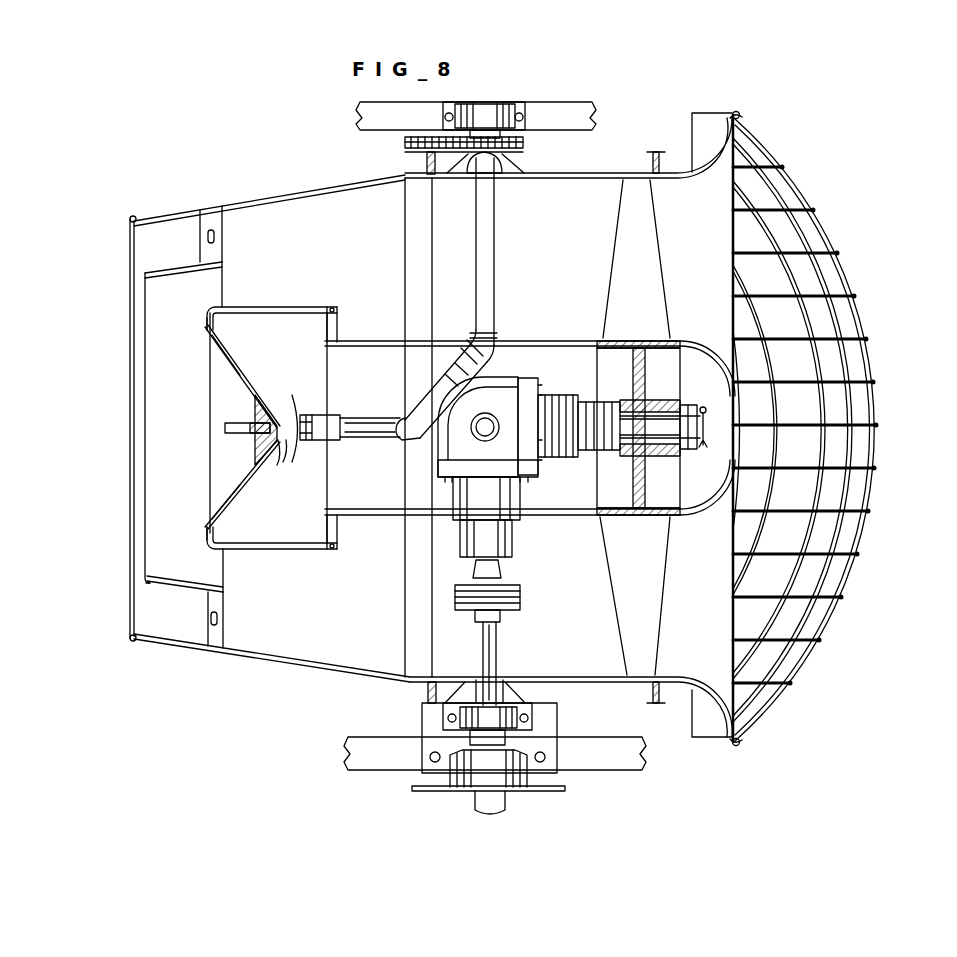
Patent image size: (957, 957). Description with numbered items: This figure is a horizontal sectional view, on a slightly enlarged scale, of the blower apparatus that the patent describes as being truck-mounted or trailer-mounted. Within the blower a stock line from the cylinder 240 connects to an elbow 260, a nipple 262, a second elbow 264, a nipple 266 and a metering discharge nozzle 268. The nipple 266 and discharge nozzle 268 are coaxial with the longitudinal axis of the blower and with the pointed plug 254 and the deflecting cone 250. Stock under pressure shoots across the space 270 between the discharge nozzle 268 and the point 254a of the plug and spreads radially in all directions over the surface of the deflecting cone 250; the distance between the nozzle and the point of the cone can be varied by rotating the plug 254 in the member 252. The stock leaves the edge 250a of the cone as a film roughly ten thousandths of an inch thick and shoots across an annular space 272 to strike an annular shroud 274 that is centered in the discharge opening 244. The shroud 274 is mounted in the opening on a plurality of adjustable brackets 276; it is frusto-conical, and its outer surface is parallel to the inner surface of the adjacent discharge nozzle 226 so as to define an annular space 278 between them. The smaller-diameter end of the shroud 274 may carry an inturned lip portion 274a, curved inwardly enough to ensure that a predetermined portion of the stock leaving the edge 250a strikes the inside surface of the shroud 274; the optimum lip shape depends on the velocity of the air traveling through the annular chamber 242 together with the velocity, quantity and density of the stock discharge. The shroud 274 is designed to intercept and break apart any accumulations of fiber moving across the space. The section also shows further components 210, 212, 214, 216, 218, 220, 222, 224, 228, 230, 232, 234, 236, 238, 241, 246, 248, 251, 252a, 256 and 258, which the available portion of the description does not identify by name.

The housing 210 is at (585, 175).
The drive gear 212 is at (500, 156).
The lower bracket 214 is at (503, 675).
The upper bearing 216 is at (468, 108).
The lower bearing 218 is at (425, 710).
The support beam 220 is at (583, 112).
The grille mounting 222 is at (735, 167).
The spherical grille 224 is at (855, 338).
The discharge nozzle 226 is at (197, 210).
The drive shaft 228 is at (663, 405).
The horn 230 is at (645, 228).
The gearbox 232 is at (510, 390).
The lower shaft 234 is at (497, 639).
The collar 236 is at (483, 677).
The hub block 238 is at (647, 338).
The cylinder 240 is at (522, 344).
The upper duct wall 241 is at (397, 337).
The annular chamber 242 is at (553, 252).
The discharge opening 244 is at (128, 634).
The duct wall 246 is at (337, 332).
The mounting bracket 248 is at (277, 307).
The deflecting cone 250 is at (240, 394).
The edge of the deflecting cone 250a is at (203, 327).
The upper chute plate 251 is at (230, 358).
The member 252 is at (257, 413).
The lower chute plate 252a is at (260, 500).
The pointed plug 254 is at (228, 433).
The point of the plug 254a is at (295, 400).
The vertical pipe 256 is at (495, 214).
The pipe collar 258 is at (490, 180).
The elbow 260 is at (473, 352).
The nipple 262 is at (463, 374).
The elbow 264 is at (443, 387).
The nipple 266 is at (355, 440).
The metering discharge nozzle 268 is at (317, 417).
The space 270 is at (293, 445).
The annular space 272 is at (210, 279).
The annular shroud 274 is at (188, 264).
The inturned lip portion 274a is at (148, 583).
The adjustable brackets 276 is at (224, 237).
The annular space 278 is at (152, 264).